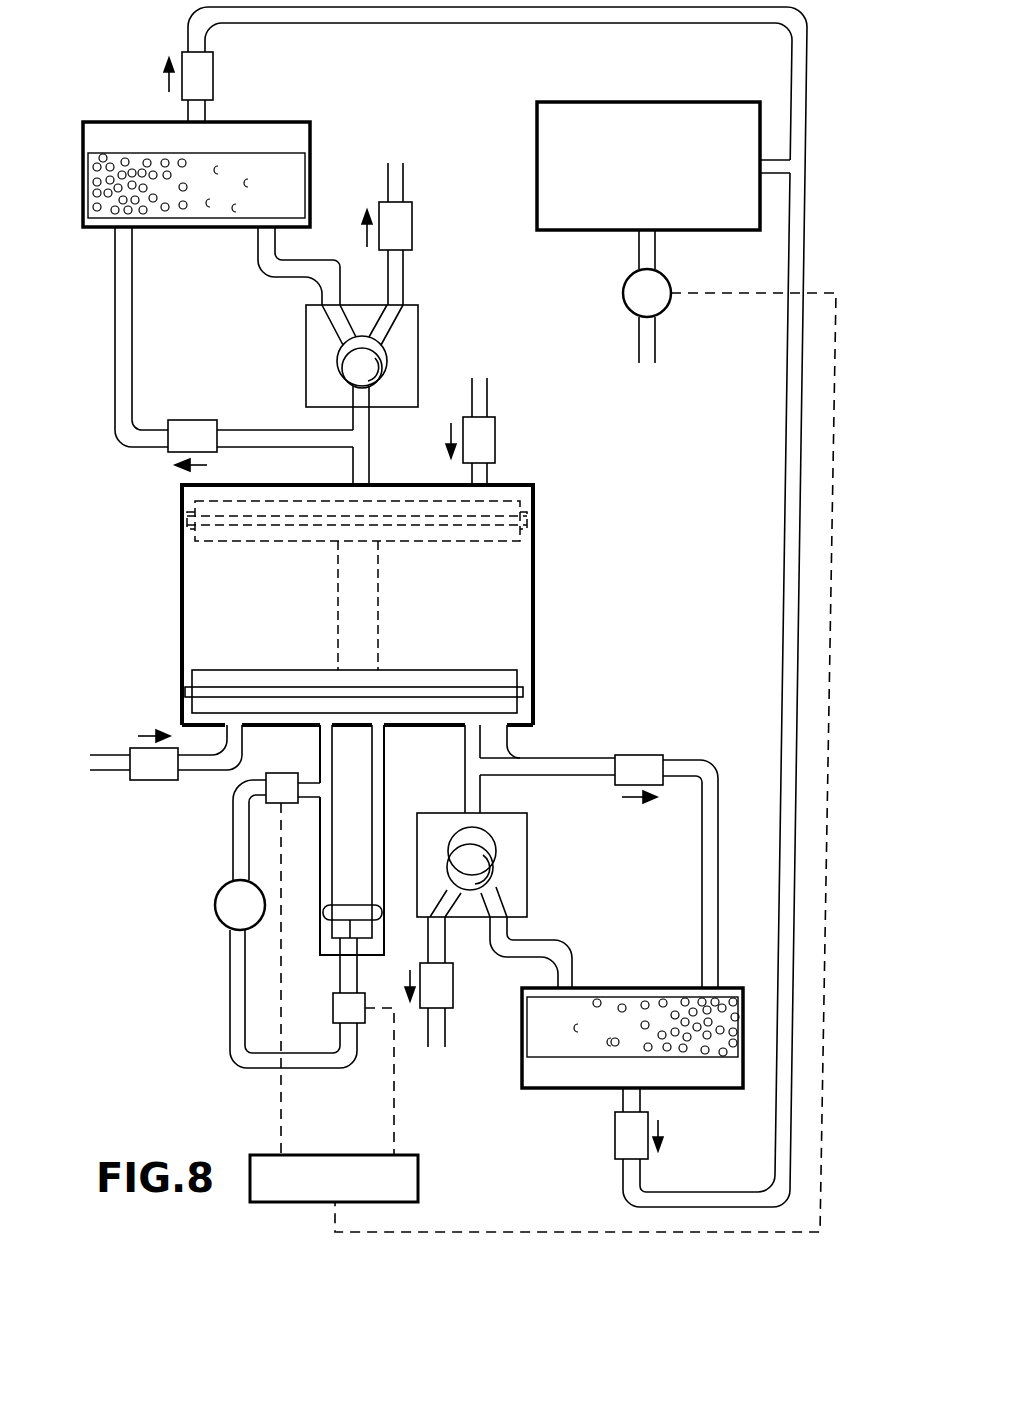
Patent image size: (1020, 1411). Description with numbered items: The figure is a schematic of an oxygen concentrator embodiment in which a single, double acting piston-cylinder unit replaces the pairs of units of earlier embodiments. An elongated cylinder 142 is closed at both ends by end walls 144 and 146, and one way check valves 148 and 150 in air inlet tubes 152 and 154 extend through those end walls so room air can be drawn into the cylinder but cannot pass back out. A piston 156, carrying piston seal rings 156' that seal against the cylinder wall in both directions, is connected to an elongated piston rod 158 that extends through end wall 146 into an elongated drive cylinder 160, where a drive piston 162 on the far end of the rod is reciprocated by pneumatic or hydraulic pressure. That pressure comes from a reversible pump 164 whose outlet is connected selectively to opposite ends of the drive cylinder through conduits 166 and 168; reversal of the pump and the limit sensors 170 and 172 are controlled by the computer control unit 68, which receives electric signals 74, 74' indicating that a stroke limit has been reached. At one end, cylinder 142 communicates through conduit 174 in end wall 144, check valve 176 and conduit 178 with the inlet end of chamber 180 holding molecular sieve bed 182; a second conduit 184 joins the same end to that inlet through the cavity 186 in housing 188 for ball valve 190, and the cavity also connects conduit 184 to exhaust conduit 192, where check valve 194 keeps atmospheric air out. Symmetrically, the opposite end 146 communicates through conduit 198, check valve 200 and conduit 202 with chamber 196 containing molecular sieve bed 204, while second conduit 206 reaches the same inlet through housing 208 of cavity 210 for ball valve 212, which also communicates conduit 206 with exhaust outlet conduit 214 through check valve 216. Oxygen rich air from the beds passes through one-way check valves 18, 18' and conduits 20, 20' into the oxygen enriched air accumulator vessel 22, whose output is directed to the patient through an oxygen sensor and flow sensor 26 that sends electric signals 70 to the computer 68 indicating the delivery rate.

The one-way check valve 18 is at (221, 87).
The one-way check valve 18' is at (604, 1123).
The conduit 20 is at (497, 83).
The conduit 20' is at (714, 683).
The oxygen enriched air accumulator vessel 22 is at (710, 102).
The oxygen sensor and flow sensor 26 is at (623, 293).
The computer control unit 68 is at (418, 1177).
The electric signals 70 is at (548, 1232).
The electric signals 74 is at (246, 979).
The electric signals 74' is at (415, 1081).
The elongated cylinder 142 is at (533, 610).
The end wall 144 is at (517, 485).
The end wall 146 is at (505, 728).
The one way check valve 148 is at (495, 443).
The one way check valve 150 is at (142, 748).
The air inlet tube 152 is at (487, 398).
The air inlet tube 154 is at (105, 770).
The piston 156 is at (354, 666).
The piston seal rings 156' is at (354, 664).
The elongated piston rod 158 is at (372, 754).
The elongated drive cylinder 160 is at (384, 788).
The drive piston 162 is at (347, 937).
The reversible pump 164 is at (215, 905).
The conduit 166 is at (233, 853).
The conduit 168 is at (230, 1004).
The limit sensor 170 is at (283, 773).
The limit sensor 172 is at (365, 1023).
The conduit 174 is at (369, 462).
The check valve 176 is at (195, 420).
The conduit 178 is at (133, 320).
The chamber 180 is at (100, 122).
The molecular sieve bed 182 is at (251, 153).
The second conduit 184 is at (258, 266).
The cavity 186 is at (378, 340).
The housing 188 is at (306, 345).
The ball valve 190 is at (350, 367).
The exhaust conduit 192 is at (403, 178).
The check valve 194 is at (412, 228).
The chamber 196 is at (730, 1088).
The conduit 198 is at (482, 797).
The check valve 200 is at (640, 755).
The conduit 202 is at (702, 873).
The molecular sieve bed 204 is at (580, 1057).
The second conduit 206 is at (565, 952).
The housing 208 is at (527, 824).
The cavity 210 is at (488, 836).
The ball valve 212 is at (492, 872).
The exhaust outlet conduit 214 is at (445, 1027).
The check valve 216 is at (453, 995).